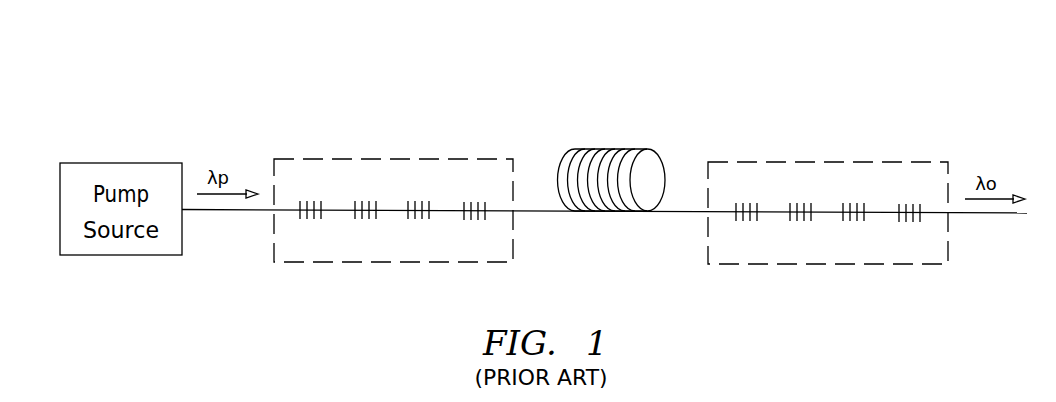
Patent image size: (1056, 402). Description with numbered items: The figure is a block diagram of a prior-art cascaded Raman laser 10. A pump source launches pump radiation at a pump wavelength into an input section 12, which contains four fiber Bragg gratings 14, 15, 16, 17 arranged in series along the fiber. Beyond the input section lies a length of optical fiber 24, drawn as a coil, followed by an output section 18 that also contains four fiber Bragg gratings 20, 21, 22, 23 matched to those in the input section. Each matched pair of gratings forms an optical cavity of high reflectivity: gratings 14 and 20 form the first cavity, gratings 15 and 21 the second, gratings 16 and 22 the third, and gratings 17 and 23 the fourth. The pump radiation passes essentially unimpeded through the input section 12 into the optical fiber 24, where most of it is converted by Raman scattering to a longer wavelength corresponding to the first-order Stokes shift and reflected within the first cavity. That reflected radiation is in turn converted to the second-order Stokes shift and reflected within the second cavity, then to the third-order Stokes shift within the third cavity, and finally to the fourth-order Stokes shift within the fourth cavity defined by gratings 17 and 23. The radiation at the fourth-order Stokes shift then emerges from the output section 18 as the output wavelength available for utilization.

The cascaded Raman laser 10 is at (772, 55).
The input section 12 is at (409, 270).
The fiber Bragg grating 14 is at (305, 201).
The fiber Bragg grating 15 is at (361, 201).
The fiber Bragg grating 16 is at (414, 201).
The fiber Bragg grating 17 is at (470, 202).
The output section 18 is at (844, 272).
The fiber Bragg grating 20 is at (742, 203).
The fiber Bragg grating 21 is at (796, 203).
The fiber Bragg grating 22 is at (849, 203).
The fiber Bragg grating 23 is at (905, 204).
The optical fiber 24 is at (607, 142).